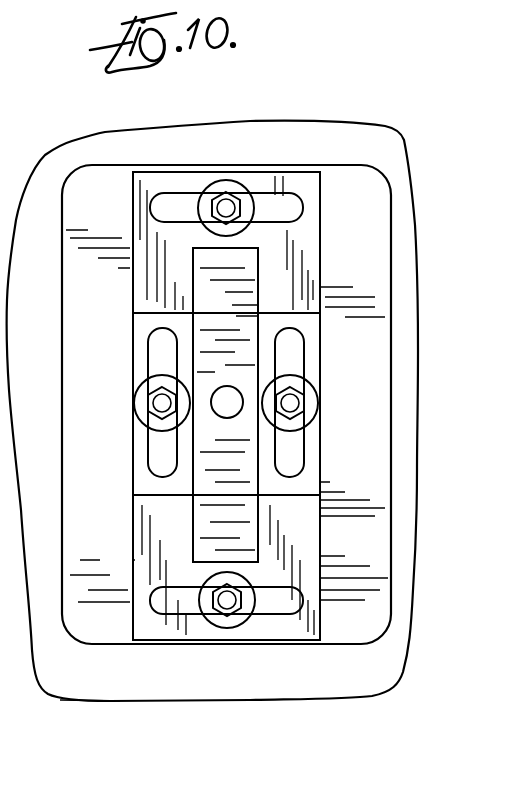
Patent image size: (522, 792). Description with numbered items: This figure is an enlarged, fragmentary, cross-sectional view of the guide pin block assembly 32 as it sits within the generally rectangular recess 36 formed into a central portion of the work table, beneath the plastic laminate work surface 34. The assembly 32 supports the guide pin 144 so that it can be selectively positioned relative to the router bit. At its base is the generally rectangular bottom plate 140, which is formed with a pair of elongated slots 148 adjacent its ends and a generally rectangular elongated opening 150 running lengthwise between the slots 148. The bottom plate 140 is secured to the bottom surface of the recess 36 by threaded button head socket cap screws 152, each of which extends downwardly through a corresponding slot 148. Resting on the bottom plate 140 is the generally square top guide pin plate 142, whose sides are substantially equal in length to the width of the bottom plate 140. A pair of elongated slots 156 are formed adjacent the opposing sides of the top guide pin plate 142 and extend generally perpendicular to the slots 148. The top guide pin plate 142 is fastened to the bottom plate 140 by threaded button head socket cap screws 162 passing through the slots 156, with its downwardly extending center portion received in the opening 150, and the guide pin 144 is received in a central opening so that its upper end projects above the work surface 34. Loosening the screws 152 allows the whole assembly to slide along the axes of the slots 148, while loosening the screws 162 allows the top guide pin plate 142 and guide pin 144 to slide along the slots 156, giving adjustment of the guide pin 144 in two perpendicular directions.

The guide pin block assembly 32 is at (96, 363).
The work surface 34 is at (84, 686).
The recess 36 is at (66, 296).
The bottom plate 140 is at (127, 562).
The top guide pin plate 142 is at (136, 490).
The guide pin 144 is at (225, 410).
The elongated slots 148 is at (298, 208).
The elongated opening 150 is at (256, 512).
The threaded button head socket cap screws 152 is at (231, 186).
The elongated slots 156 is at (155, 452).
The threaded button head socket cap screws 162 is at (140, 399).